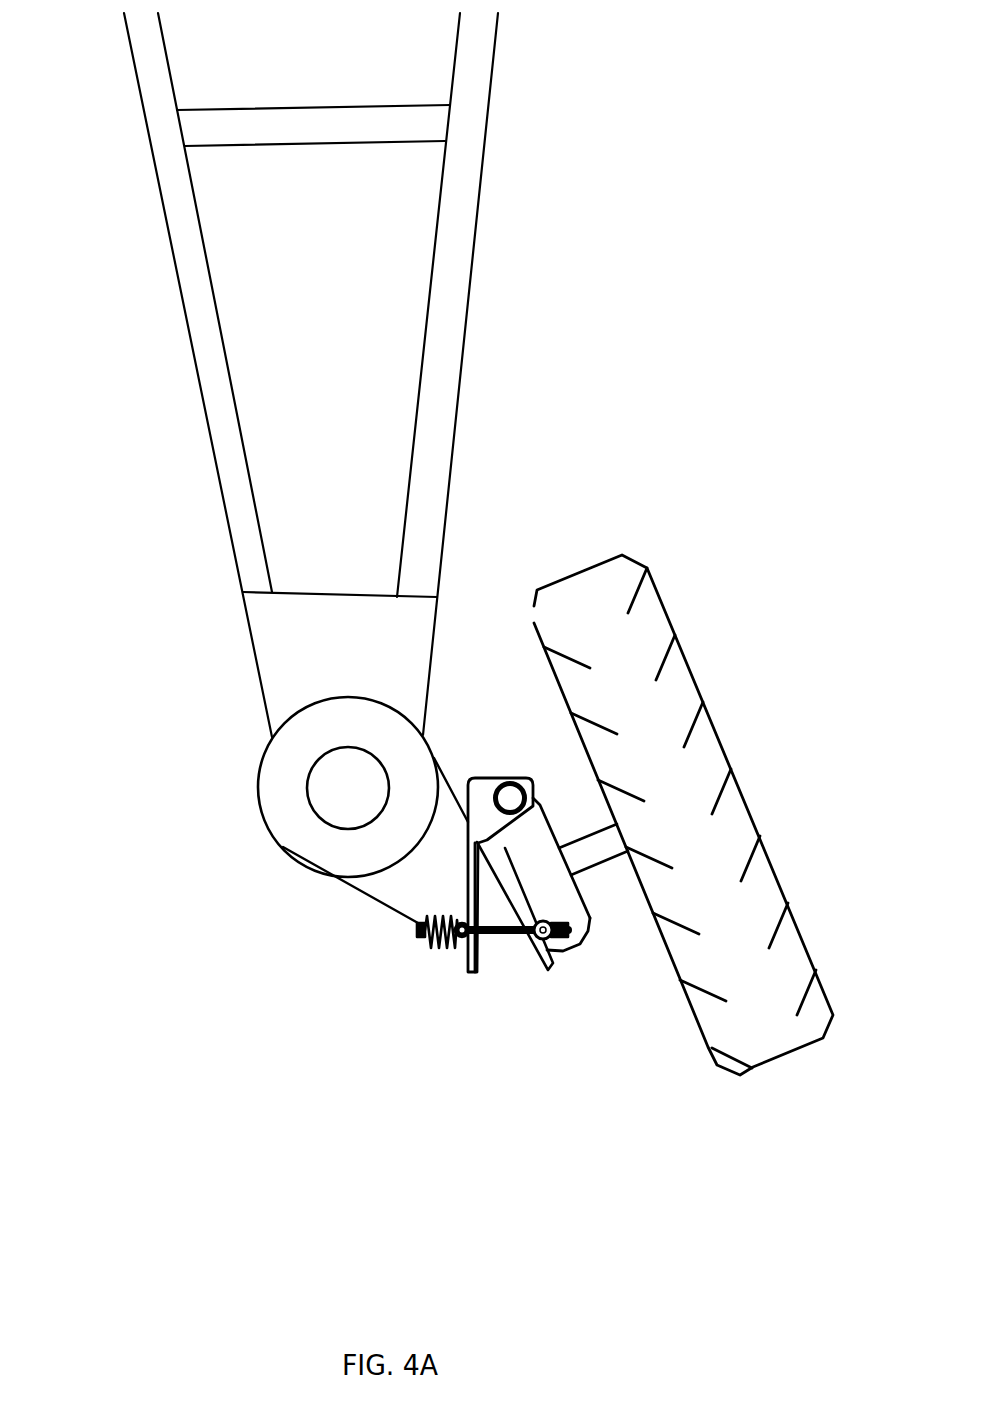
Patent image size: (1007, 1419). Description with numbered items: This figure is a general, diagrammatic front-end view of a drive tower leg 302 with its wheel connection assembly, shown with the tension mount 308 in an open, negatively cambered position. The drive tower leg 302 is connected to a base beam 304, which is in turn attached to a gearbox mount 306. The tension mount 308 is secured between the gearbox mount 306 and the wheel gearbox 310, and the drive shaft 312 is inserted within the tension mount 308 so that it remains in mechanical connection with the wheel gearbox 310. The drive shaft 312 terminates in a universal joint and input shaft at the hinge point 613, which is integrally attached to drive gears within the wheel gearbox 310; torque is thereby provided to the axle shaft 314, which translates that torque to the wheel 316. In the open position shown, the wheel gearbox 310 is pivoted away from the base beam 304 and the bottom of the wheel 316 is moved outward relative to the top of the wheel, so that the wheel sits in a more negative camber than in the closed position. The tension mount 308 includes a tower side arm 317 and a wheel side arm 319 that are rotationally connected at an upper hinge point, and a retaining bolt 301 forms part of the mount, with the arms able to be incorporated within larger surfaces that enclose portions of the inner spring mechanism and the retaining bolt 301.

The drive tower leg 302 is at (450, 327).
The base beam 304 is at (300, 802).
The gearbox mount 306 is at (383, 895).
The retaining bolt 301 is at (500, 938).
The hinge point 613 is at (495, 787).
The drive shaft 312 is at (512, 792).
The wheel gearbox 310 is at (577, 947).
The wheel side arm 319 is at (548, 970).
The tension mount 308 is at (457, 950).
The tower side arm 317 is at (466, 960).
The axle shaft 314 is at (592, 853).
The wheel 316 is at (628, 687).